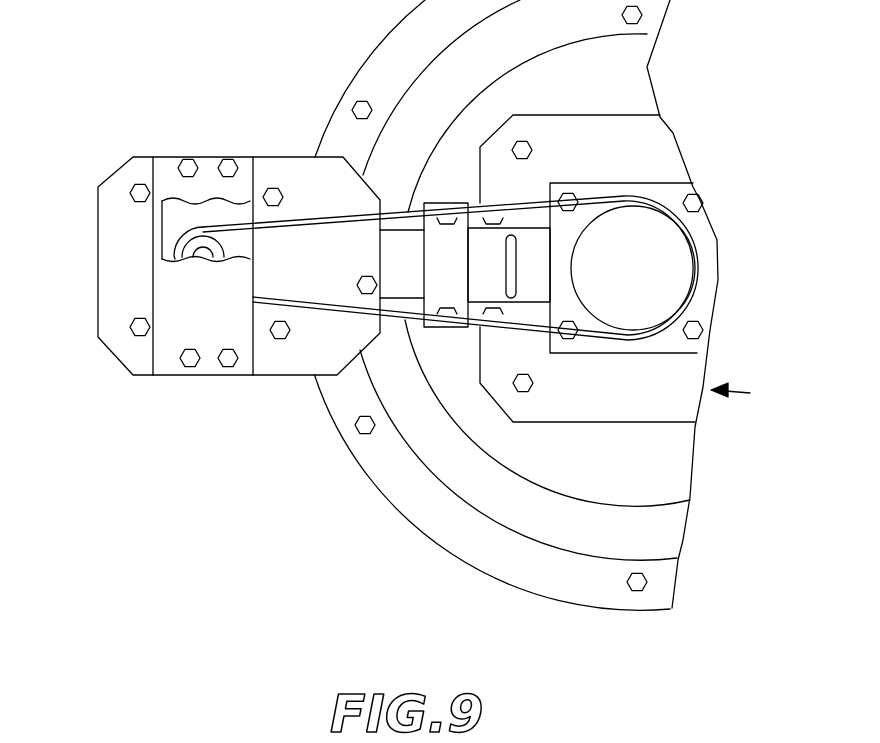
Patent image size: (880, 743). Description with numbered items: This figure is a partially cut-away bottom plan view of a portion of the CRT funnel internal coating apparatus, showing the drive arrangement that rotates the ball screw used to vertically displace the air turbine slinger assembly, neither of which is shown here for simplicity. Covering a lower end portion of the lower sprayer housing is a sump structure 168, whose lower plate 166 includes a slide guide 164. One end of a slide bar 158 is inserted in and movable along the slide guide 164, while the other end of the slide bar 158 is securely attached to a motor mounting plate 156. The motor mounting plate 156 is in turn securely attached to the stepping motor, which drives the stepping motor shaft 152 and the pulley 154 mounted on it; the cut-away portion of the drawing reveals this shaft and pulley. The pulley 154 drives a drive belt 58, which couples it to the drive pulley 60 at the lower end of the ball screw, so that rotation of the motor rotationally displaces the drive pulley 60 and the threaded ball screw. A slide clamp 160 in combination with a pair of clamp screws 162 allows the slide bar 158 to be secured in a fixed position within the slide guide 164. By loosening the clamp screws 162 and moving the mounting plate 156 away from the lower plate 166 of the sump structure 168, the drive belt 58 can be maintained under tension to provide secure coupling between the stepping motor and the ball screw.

The drive belt 58 is at (530, 200).
The drive pulley 60 is at (682, 257).
The stepping motor shaft 152 is at (213, 261).
The pulley 154 is at (190, 231).
The motor mounting plate 156 is at (130, 348).
The slide bar 158 is at (400, 247).
The slide clamp 160 is at (440, 272).
The clamp screws 162 is at (445, 318).
The slide guide 164 is at (537, 263).
The lower plate 166 is at (655, 135).
The sump structure 168 is at (758, 390).